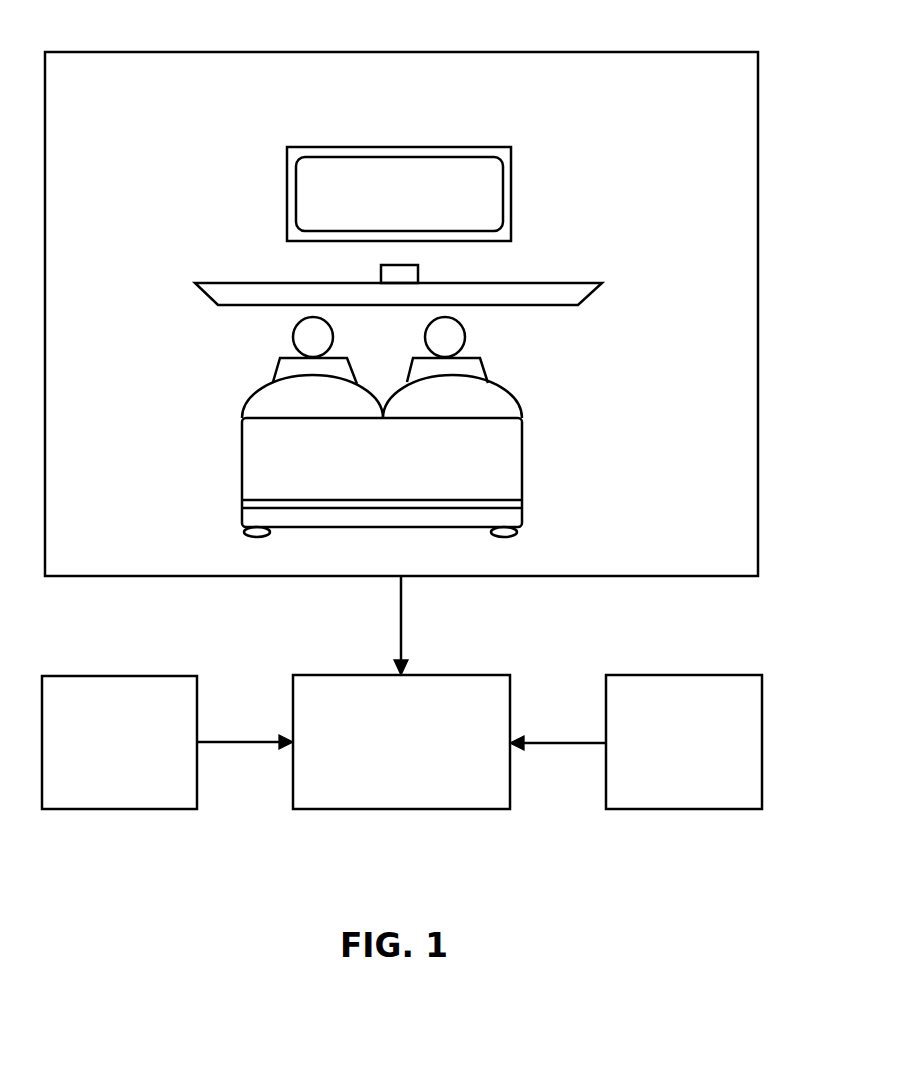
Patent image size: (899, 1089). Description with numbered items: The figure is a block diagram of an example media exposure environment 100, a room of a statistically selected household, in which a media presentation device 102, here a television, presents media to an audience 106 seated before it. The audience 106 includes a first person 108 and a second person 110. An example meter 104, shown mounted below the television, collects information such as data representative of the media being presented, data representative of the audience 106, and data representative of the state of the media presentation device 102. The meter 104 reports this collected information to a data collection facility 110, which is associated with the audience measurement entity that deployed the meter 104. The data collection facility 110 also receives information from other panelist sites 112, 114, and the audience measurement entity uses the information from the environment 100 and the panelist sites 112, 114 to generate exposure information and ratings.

The media exposure environment 100 is at (401, 294).
The media presentation device 102 is at (399, 194).
The meter 104 is at (439, 268).
The audience 106 is at (453, 456).
The first person 108 is at (279, 350).
The second person / data collection facility 110 is at (427, 563).
The panelist site 112 is at (119, 742).
The panelist site 114 is at (684, 742).